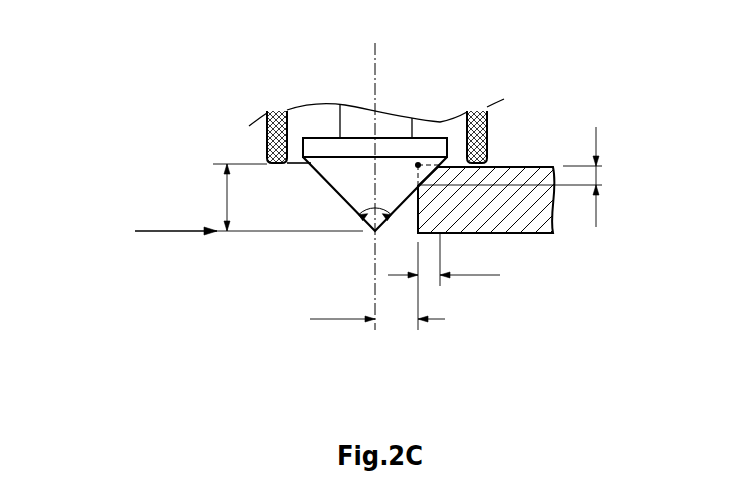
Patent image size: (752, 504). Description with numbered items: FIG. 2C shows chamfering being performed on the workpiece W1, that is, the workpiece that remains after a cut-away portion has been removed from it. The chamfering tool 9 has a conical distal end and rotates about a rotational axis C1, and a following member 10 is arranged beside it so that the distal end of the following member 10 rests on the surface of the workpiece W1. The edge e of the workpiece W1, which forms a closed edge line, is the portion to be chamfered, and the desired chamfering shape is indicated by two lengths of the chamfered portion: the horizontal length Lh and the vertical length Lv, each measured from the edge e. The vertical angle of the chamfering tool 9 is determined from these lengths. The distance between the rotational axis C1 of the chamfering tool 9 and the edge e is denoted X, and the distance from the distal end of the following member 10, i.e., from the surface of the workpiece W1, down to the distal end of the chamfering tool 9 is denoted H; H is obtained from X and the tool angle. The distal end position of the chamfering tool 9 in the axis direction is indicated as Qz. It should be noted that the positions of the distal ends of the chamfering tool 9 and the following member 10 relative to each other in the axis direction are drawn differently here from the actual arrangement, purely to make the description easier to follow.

The chamfering tool 9 is at (390, 170).
The following member 10 is at (266, 133).
The rotational axis C1 is at (375, 63).
The edge e is at (418, 165).
The workpiece W1 is at (517, 167).
The distance H is at (285, 197).
The distal end position Qz is at (159, 230).
The length Lv is at (524, 177).
The length Lh is at (444, 281).
The distance X is at (377, 307).